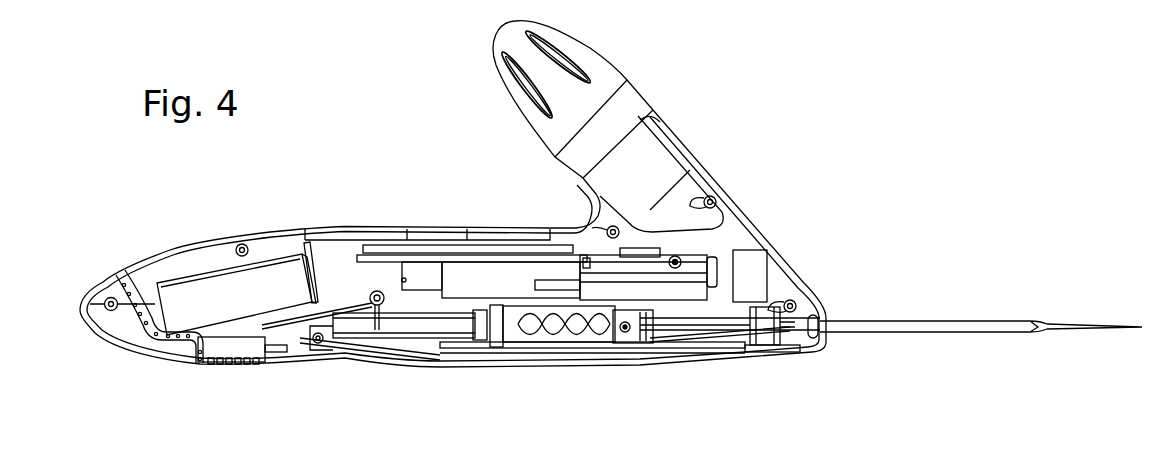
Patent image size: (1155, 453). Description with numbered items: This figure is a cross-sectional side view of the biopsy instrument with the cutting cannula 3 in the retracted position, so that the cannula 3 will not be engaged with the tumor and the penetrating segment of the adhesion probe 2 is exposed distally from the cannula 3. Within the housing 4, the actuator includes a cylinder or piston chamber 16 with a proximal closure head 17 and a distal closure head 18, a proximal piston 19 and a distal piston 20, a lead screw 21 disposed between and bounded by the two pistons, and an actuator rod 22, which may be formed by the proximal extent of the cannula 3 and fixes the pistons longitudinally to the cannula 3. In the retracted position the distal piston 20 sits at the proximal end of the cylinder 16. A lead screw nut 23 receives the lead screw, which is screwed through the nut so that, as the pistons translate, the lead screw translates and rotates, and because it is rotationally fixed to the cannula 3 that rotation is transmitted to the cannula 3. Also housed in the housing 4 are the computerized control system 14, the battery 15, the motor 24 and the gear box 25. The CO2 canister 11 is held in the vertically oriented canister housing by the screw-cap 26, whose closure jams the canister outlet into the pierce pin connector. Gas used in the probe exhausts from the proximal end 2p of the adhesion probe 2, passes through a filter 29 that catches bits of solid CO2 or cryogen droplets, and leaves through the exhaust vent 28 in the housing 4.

The adhesion probe 2 is at (1093, 322).
The proximal end of the adhesion probe 2p is at (300, 340).
The cutting cannula 3 is at (907, 318).
The housing 4 is at (173, 245).
The CO2 canister 11 is at (658, 145).
The computerized control system 14 is at (432, 250).
The battery 15 is at (240, 277).
The cylinder or piston chamber 16 is at (693, 337).
The proximal closure head 17 is at (497, 343).
The distal closure head 18 is at (751, 347).
The proximal piston 19 is at (647, 337).
The distal piston 20 is at (513, 337).
The lead screw 21 is at (727, 212).
The actuator rod 22 is at (553, 337).
The lead screw nut 23 is at (620, 337).
The motor 24 is at (408, 268).
The gear box 25 is at (492, 277).
The screw-cap 26 is at (519, 110).
The exhaust vent 28 is at (112, 296).
The filter 29 is at (140, 332).